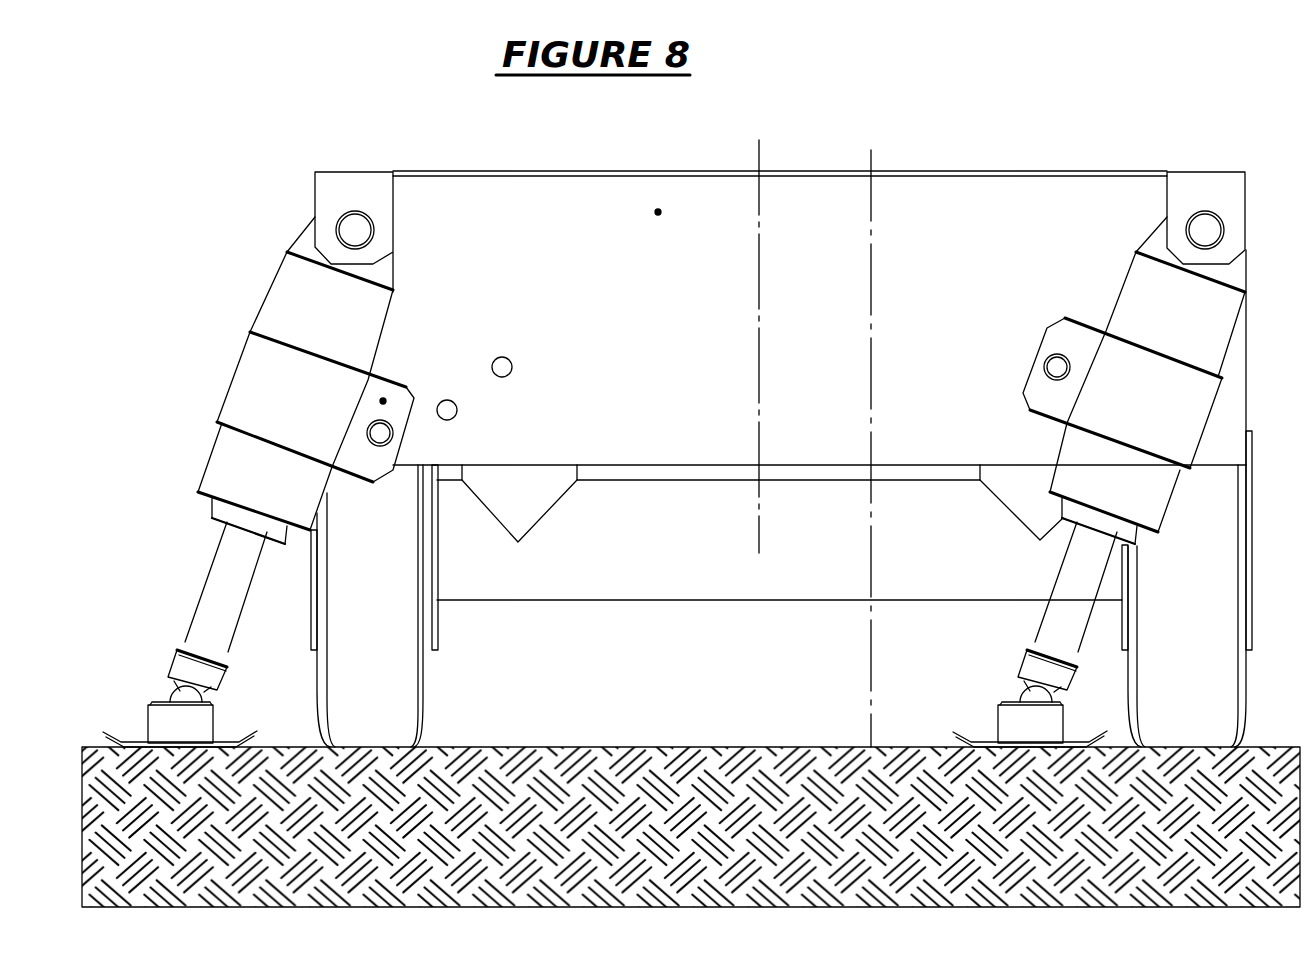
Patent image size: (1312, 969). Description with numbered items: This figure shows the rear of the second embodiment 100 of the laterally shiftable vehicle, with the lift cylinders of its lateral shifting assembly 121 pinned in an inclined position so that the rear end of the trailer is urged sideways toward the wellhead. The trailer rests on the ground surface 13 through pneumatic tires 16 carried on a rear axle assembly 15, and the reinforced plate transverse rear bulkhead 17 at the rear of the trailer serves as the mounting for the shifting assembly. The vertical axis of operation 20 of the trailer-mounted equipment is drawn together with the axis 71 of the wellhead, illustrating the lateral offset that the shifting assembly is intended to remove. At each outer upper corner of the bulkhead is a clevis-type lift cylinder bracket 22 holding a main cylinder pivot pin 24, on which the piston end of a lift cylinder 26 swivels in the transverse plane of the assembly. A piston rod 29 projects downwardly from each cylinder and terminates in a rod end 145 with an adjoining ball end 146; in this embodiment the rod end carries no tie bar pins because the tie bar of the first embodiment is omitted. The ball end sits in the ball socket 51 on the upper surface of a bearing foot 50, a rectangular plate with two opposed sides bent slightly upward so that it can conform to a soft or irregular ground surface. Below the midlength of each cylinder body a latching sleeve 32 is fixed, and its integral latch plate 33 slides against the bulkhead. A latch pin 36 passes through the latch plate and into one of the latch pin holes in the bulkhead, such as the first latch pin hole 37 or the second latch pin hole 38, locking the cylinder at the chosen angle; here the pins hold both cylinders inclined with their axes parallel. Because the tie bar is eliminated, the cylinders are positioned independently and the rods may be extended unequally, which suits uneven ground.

The second embodiment 100 is at (272, 141).
The ground surface 13 is at (645, 747).
The rear axle assembly 15 is at (506, 600).
The pneumatic tire 16 is at (425, 693).
The transverse rear bulkhead 17 is at (658, 212).
The vertical axis of operation 20 is at (759, 152).
The axis of the wellhead 71 is at (871, 152).
The lift cylinder bracket 22 is at (1205, 172).
The main cylinder pivot pin 24 is at (342, 215).
The lift cylinder 26 is at (1171, 505).
The piston rod 29 is at (218, 550).
The latching sleeve 32 is at (237, 482).
The latch plate 33 is at (382, 400).
The latch pin 36 is at (368, 423).
The first latch pin hole 37 is at (497, 357).
The second latch pin hole 38 is at (438, 402).
The bearing foot 50 is at (143, 743).
The ball socket 51 is at (997, 722).
The lateral shifting assembly 121 is at (212, 461).
The rod end 145 is at (175, 660).
The ball end 146 is at (168, 693).